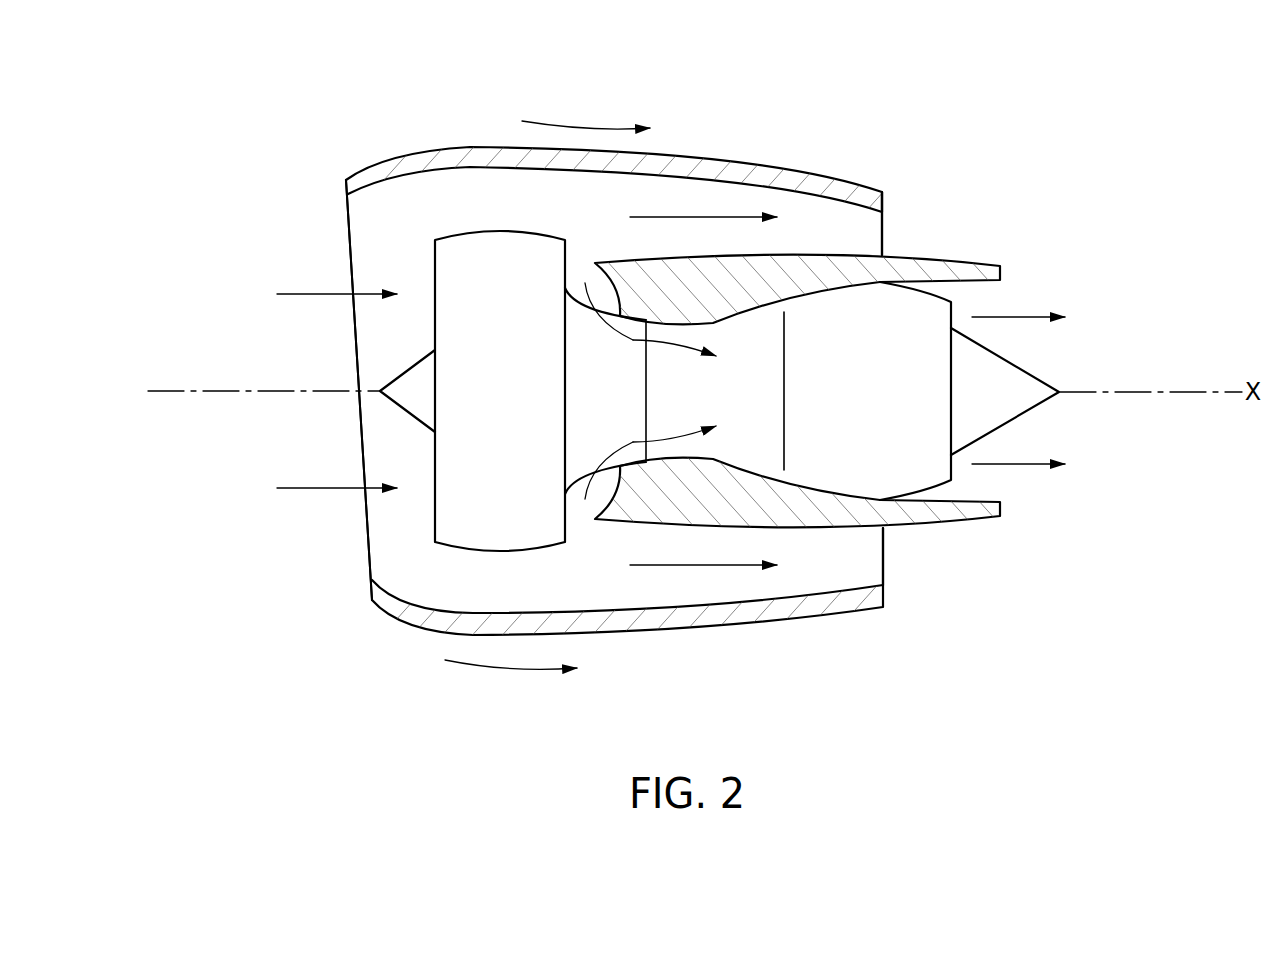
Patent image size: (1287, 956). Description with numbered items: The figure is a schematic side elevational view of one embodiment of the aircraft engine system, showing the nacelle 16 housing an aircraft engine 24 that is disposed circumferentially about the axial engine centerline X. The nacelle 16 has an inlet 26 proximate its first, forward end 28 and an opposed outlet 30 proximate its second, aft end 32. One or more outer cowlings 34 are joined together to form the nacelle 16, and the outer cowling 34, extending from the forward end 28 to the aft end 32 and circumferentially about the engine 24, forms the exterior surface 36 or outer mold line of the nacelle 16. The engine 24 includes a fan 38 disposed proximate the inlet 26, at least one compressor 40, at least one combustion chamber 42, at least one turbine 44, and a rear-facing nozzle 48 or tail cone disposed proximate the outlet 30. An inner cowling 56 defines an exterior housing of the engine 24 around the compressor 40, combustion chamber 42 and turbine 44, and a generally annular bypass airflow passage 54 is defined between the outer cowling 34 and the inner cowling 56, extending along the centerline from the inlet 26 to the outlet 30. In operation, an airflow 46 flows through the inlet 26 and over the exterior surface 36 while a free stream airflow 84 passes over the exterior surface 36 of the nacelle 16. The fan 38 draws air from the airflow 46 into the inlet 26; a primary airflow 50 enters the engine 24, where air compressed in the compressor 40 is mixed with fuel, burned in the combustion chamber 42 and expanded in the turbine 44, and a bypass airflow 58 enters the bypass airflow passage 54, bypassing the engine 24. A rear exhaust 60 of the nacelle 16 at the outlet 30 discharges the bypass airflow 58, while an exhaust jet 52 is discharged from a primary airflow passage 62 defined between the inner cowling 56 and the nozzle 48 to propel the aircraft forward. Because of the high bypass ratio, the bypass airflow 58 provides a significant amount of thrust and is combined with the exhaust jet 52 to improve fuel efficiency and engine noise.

The nacelle 16 is at (893, 177).
The aircraft engine 24 is at (412, 432).
The inlet 26 is at (346, 210).
The first end 28 is at (300, 347).
The outlet 30 is at (884, 568).
The second end 32 is at (1020, 535).
The outer cowling 34 is at (704, 160).
The exterior surface 36 is at (462, 147).
The fan 38 is at (479, 405).
The compressor 40 is at (587, 405).
The combustion chamber 42 is at (722, 405).
The turbine 44 is at (859, 405).
The airflow 46 is at (303, 293).
The nozzle 48 is at (969, 405).
The primary airflow 50 is at (633, 340).
The exhaust jet 52 is at (1030, 319).
The bypass airflow passage 54 is at (562, 219).
The inner cowling 56 is at (962, 258).
The bypass airflow 58 is at (690, 220).
The rear exhaust 60 is at (884, 224).
The primary airflow passage 62 is at (1018, 296).
The free stream airflow 84 is at (580, 121).